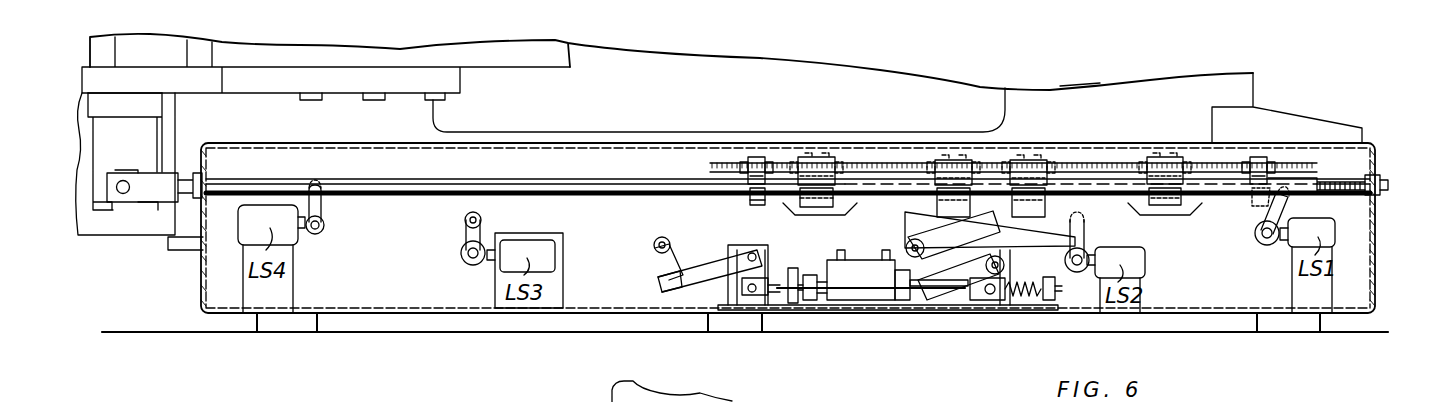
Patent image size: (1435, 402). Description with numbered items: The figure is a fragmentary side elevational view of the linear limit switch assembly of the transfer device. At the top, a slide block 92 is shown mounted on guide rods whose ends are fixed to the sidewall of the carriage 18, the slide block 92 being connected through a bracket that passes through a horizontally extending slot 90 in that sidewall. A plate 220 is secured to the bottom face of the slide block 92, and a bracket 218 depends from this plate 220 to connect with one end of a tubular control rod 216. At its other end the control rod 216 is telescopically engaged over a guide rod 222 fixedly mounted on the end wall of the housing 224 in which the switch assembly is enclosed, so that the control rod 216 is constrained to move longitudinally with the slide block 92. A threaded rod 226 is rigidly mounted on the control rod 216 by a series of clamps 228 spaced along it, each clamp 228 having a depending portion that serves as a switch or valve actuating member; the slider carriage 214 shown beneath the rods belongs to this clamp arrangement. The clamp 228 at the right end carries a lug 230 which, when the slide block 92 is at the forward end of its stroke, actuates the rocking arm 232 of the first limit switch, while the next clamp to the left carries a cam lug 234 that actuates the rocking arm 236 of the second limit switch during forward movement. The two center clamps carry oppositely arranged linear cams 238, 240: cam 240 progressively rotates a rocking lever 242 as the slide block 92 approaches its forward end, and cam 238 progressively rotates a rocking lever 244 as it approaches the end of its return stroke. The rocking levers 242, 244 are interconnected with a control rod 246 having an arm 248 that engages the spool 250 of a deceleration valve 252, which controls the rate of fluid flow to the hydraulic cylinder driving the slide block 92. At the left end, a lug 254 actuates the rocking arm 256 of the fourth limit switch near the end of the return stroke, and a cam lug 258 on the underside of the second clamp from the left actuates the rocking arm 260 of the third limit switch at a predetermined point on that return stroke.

The carriage 18 is at (1100, 83).
The horizontally extending slot 90 is at (980, 93).
The slide block 92 is at (553, 50).
The slider carriage 214 is at (1040, 160).
The tubular control rod 216 is at (364, 181).
The bracket 218 is at (140, 140).
The plate 220 is at (253, 82).
The guide rod 222 is at (1350, 184).
The housing 224 is at (1142, 150).
The threaded rod 226 is at (905, 165).
The clamp 228 is at (755, 160).
The lug 230 is at (1262, 160).
The rocking arm 232 is at (1283, 212).
The cam lug 234 is at (1165, 216).
The rocking arm 236 is at (1089, 243).
The linear cam 238 is at (1052, 226).
The linear cam 240 is at (930, 244).
The rocking lever 242 is at (947, 278).
The rocking lever 244 is at (706, 282).
The control rod 246 is at (870, 290).
The arm 248 is at (793, 266).
The spool 250 is at (819, 273).
The deceleration valve 252 is at (858, 262).
The lug 254 is at (752, 206).
The rocking arm 256 is at (326, 217).
The cam lug 258 is at (792, 209).
The rocking arm 260 is at (484, 228).